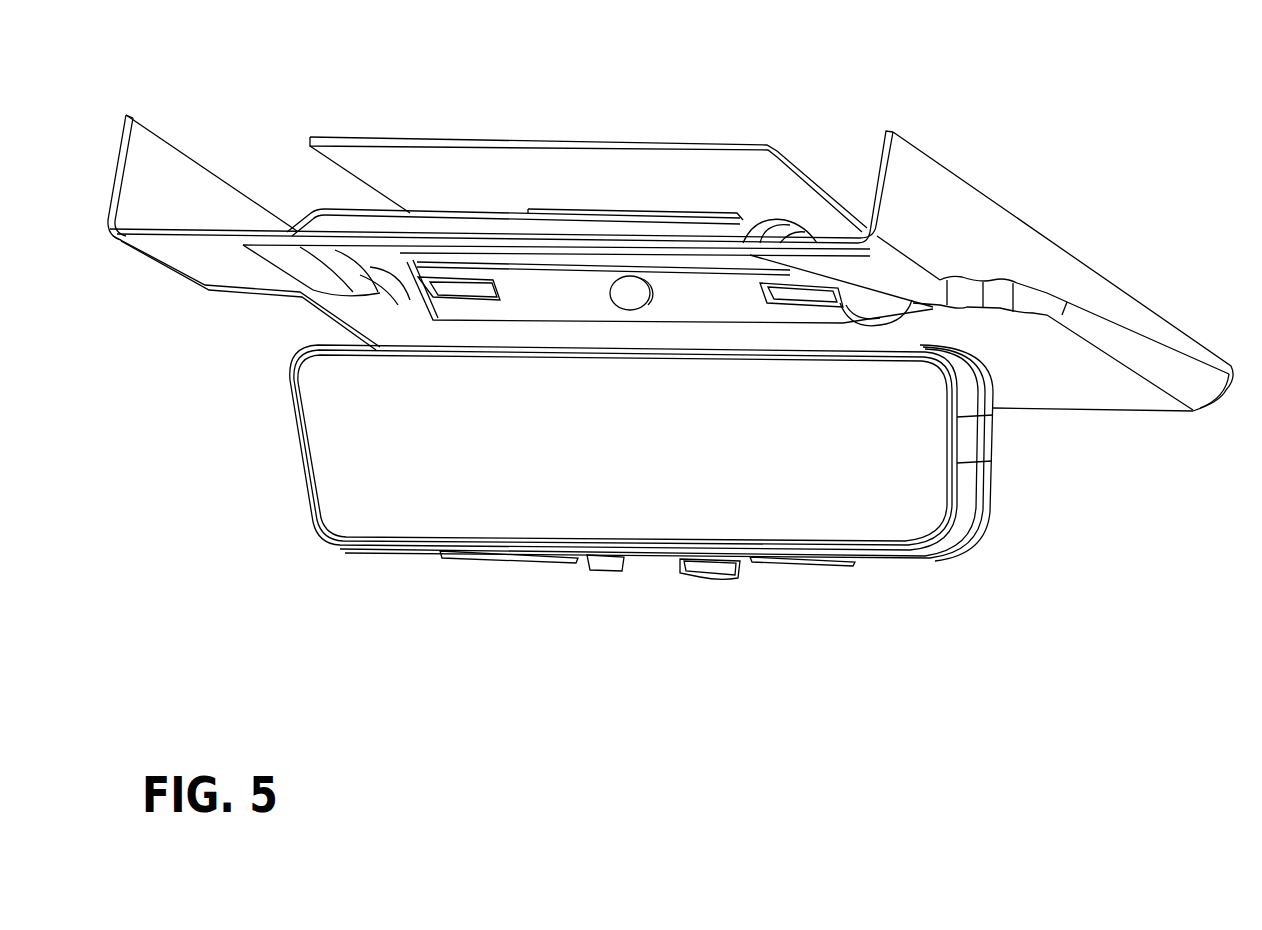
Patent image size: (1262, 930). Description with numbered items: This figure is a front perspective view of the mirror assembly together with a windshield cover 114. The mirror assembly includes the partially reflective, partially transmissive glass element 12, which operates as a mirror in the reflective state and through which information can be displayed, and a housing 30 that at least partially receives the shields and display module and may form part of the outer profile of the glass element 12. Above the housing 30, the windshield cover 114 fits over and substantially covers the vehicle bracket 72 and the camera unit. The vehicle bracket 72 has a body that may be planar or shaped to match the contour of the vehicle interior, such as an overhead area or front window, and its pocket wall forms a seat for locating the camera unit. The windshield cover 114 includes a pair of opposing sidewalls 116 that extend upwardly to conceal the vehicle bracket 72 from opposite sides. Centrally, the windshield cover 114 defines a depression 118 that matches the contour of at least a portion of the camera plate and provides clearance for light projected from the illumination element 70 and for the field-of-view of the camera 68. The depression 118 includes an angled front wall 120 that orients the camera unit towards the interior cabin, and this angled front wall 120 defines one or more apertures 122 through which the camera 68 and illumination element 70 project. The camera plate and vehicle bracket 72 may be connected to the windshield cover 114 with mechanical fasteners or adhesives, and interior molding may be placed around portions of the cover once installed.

The partially reflective, partially transmissive element 12 is at (397, 490).
The housing 30 is at (985, 473).
The camera 68 is at (625, 284).
The illumination element 70 is at (453, 290).
The vehicle bracket 72 is at (368, 135).
The windshield cover 114 is at (1022, 217).
The sidewalls 116 is at (1093, 290).
The depression 118 is at (515, 263).
The angled front wall 120 is at (563, 282).
The apertures 122 is at (756, 219).